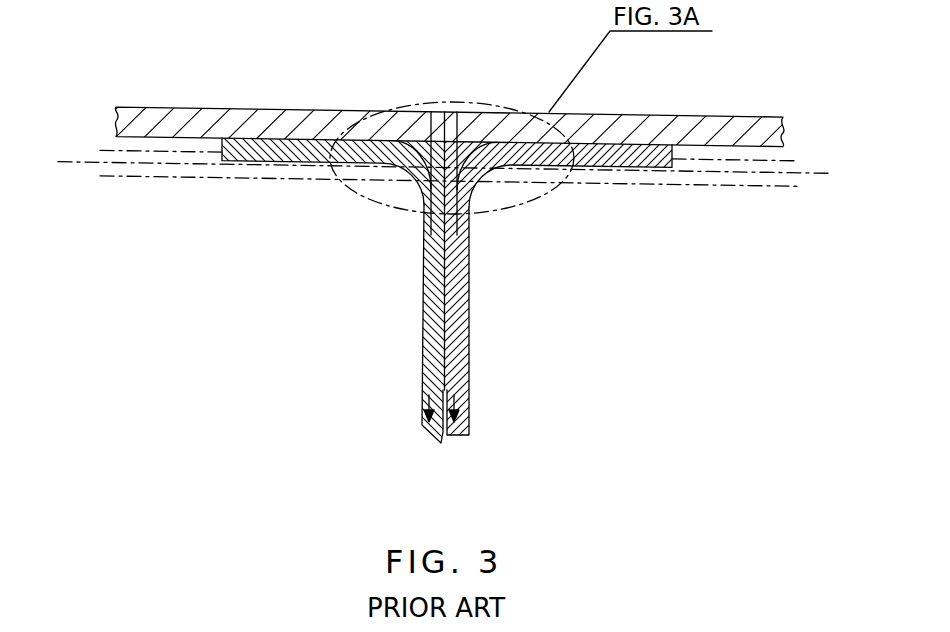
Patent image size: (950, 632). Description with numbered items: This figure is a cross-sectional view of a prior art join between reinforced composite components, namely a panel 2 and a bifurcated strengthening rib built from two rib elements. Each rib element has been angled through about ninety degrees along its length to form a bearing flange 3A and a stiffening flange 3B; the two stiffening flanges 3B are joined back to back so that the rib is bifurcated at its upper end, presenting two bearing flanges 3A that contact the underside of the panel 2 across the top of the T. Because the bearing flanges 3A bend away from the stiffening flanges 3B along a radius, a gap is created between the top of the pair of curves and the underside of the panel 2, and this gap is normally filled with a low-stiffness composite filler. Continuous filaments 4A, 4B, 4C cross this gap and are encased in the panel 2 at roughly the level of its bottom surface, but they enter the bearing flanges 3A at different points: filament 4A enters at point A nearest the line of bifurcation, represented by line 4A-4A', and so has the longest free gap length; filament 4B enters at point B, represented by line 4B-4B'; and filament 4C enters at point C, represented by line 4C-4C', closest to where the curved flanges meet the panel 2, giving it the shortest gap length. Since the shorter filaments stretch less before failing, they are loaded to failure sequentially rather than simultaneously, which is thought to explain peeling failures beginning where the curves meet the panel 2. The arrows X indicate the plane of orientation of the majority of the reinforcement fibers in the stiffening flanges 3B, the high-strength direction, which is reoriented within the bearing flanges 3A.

The panel 2 is at (677, 117).
The bearing flange 3A is at (270, 163).
The stiffening flange 3B is at (421, 318).
The filament 4A is at (432, 135).
The filament 4B is at (428, 120).
The filament 4C is at (247, 140).
The line 4A- 4A' is at (824, 191).
The line 4B- 4B' is at (871, 176).
The line 4C- 4C' is at (758, 156).
The point of entry of filament 4A A is at (422, 247).
The point of entry of filament 4B B is at (480, 185).
The point of entry of filament 4C C is at (406, 172).
The arrows X is at (430, 392).